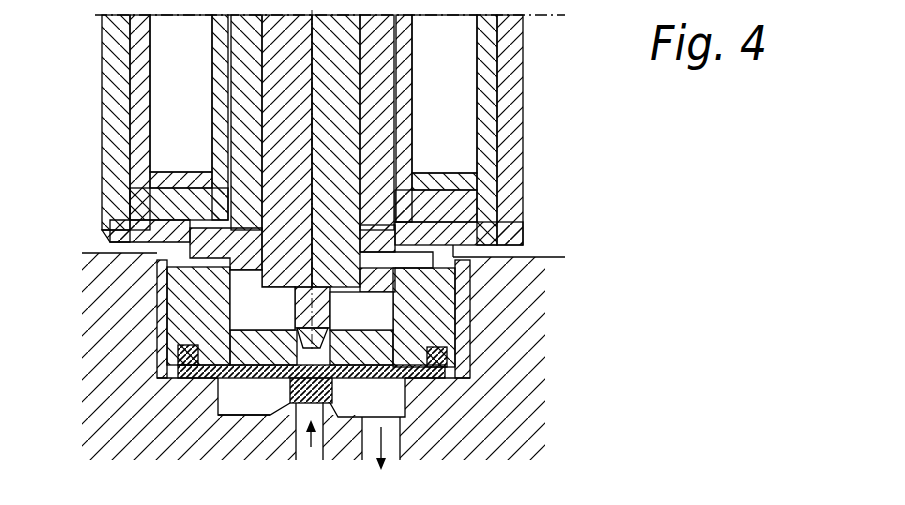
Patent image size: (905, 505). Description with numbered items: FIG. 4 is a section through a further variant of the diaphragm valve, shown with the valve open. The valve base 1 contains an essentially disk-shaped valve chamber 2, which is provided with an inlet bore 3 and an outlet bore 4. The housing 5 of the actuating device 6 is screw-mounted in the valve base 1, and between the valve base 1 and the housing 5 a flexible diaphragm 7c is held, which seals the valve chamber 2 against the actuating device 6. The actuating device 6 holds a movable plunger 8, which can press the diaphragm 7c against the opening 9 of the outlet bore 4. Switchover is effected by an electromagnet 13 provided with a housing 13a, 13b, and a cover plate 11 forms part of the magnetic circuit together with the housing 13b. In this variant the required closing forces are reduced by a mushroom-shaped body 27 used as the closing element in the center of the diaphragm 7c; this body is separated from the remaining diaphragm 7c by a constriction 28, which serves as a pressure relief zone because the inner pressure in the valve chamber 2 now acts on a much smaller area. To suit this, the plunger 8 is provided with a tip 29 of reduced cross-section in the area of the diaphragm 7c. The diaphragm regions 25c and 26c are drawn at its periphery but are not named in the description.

The valve base 1 is at (483, 317).
The valve chamber 2 is at (228, 392).
The inlet bore 3 is at (370, 450).
The outlet bore 4 is at (322, 445).
The housing 5 is at (512, 127).
The actuating device 6 is at (526, 79).
The diaphragm 7c is at (443, 383).
The plunger 8 is at (335, 178).
The opening 9 is at (295, 423).
The cover plate 11 is at (170, 207).
The electromagnet 13 is at (175, 97).
The housing 13a is at (212, 62).
The housing 13b is at (145, 135).
The valve nose 25c is at (348, 380).
The sealing ring 26c is at (178, 357).
The mushroom-shaped body 27 is at (237, 437).
The constriction 28 is at (293, 381).
The tip 29 is at (298, 343).